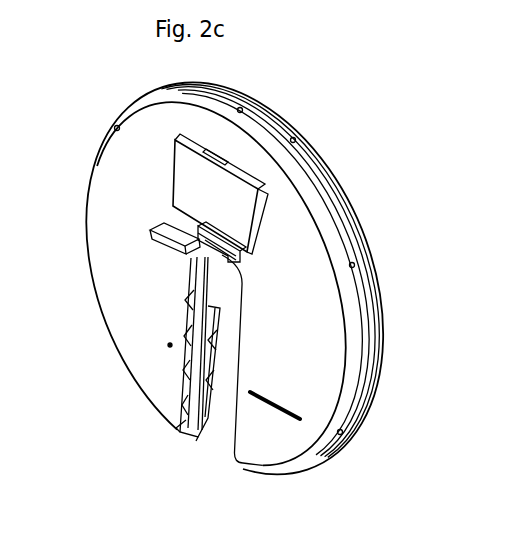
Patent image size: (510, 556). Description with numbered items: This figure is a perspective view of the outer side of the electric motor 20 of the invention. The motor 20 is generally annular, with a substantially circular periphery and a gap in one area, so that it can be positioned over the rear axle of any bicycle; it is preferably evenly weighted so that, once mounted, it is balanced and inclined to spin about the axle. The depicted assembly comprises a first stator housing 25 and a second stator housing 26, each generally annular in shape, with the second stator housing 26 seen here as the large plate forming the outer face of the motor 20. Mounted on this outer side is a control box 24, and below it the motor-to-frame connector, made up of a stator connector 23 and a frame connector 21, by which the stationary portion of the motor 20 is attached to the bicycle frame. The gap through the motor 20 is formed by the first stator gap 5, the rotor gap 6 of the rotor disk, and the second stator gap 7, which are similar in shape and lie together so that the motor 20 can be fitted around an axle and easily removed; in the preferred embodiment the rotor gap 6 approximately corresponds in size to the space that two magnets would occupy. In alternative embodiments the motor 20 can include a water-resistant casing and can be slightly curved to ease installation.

The electric motor 20 is at (313, 83).
The first stator housing 25 is at (330, 177).
The second stator housing 26 is at (288, 355).
The control box 24 is at (193, 190).
The stator connector 23 is at (247, 252).
The frame connector 21 is at (175, 237).
The first stator gap 5 is at (189, 395).
The rotor gap 6 is at (189, 395).
The second stator gap 7 is at (210, 442).